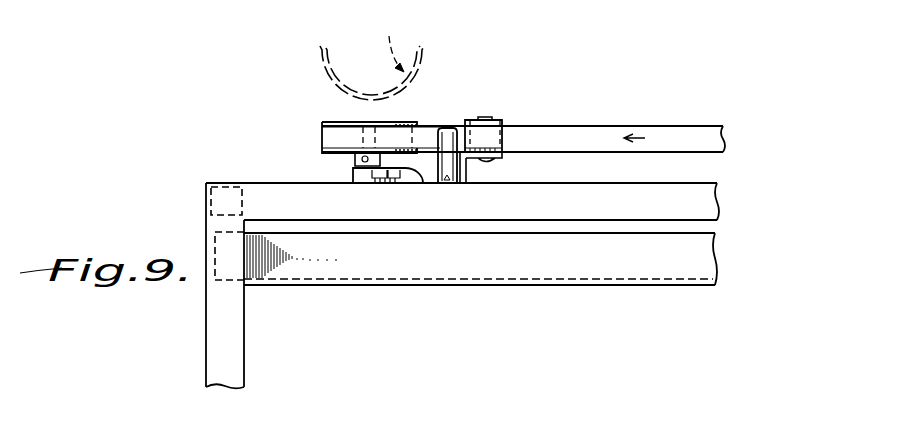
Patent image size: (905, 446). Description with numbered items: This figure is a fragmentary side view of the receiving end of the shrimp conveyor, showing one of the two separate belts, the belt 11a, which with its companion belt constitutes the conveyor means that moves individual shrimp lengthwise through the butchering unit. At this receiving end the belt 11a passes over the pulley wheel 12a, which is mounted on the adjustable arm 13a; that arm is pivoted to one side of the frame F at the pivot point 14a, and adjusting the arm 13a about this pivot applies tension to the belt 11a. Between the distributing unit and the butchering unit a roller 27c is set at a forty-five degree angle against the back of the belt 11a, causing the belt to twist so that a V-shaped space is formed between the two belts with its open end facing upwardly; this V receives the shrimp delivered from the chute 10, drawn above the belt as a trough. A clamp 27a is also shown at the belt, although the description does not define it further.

The frame F is at (700, 207).
The pivot point 14a is at (461, 201).
The conveyor belt 11a is at (724, 140).
The pulley wheel 12a is at (333, 113).
The roller 27c is at (450, 128).
The clamp 27a is at (498, 122).
The adjustable arm 13a is at (356, 180).
The chute 10 is at (406, 71).